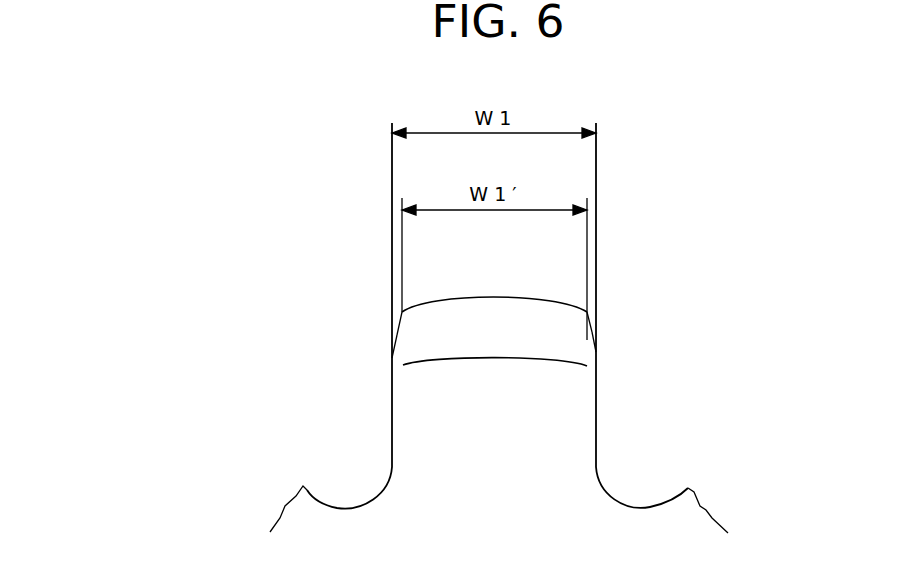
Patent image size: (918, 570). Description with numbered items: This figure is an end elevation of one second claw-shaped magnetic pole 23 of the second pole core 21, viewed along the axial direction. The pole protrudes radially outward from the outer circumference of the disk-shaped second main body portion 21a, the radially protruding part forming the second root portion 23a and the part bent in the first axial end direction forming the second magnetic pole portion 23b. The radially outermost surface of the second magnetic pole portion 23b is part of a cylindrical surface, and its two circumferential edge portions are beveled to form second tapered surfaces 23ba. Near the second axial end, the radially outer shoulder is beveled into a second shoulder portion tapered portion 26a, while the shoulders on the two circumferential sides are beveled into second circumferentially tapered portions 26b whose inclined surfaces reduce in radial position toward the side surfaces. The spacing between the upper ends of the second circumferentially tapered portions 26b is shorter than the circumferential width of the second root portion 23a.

The second pole core 21 is at (378, 358).
The second main body portion 21a is at (573, 523).
The second claw-shaped magnetic pole 23 is at (312, 386).
The second root portion 23a is at (480, 472).
The second magnetic pole portion 23b is at (488, 367).
The second tapered surface 23ba is at (573, 303).
The second shoulder portion tapered portion 26a is at (553, 340).
The second circumferentially tapered portion 26b is at (587, 328).